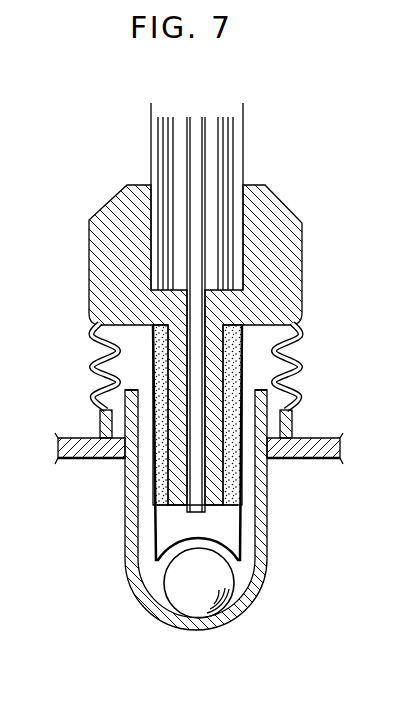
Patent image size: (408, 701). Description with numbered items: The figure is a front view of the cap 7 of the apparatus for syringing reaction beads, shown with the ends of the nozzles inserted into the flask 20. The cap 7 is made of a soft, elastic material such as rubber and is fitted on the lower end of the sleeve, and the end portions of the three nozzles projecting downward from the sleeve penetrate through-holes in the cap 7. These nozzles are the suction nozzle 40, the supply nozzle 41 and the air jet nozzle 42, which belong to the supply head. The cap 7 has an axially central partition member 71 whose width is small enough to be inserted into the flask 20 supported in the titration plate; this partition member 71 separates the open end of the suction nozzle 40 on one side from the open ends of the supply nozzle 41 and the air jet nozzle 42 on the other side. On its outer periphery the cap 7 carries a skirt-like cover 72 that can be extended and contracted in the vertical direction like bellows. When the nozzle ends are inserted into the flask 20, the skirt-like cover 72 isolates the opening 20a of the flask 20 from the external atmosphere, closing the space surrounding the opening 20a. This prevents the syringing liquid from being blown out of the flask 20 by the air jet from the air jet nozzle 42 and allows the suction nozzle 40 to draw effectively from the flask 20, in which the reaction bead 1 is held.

The reaction bead 1 is at (185, 593).
The cap 7 is at (307, 279).
The flask 20 is at (268, 488).
The opening 20a is at (246, 394).
The suction nozzle 40 is at (195, 232).
The supply nozzle 41 is at (168, 163).
The air jet nozzle 42 is at (227, 163).
The partition member 71 is at (222, 528).
The skirt-like cover 72 is at (291, 360).